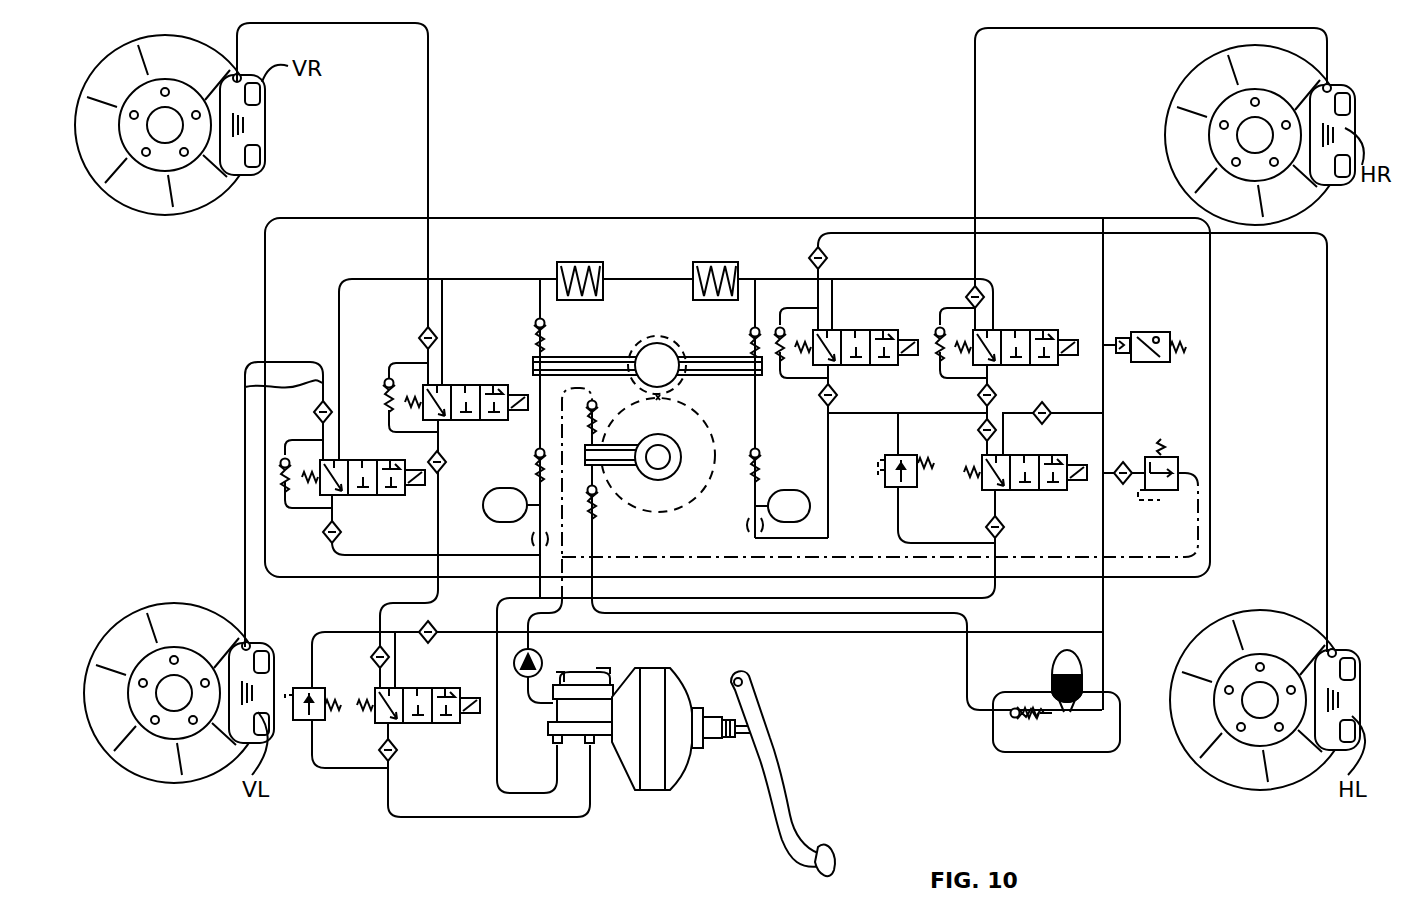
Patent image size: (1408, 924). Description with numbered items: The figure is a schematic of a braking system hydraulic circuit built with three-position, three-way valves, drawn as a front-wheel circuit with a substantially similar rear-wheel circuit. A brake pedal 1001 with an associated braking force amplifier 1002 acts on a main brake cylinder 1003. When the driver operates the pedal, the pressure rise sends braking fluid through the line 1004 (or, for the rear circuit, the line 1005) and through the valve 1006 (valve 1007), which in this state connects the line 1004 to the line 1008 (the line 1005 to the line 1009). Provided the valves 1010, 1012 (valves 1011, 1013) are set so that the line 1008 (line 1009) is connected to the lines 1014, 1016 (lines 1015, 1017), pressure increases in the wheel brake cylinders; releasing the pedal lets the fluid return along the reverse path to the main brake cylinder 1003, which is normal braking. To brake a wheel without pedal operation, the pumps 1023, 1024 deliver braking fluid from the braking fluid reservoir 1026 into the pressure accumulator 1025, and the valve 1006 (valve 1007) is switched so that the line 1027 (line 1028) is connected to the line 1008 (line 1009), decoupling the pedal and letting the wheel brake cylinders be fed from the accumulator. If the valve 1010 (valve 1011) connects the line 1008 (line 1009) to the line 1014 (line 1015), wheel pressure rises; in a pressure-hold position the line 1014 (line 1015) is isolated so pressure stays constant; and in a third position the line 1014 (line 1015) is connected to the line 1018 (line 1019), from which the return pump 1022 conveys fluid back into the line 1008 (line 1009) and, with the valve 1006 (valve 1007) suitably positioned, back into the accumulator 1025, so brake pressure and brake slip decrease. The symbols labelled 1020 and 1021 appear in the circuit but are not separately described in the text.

The brake pedal 1001 is at (787, 800).
The braking force amplifier 1002 is at (653, 783).
The main brake cylinder 1003 is at (562, 742).
The line 1004 is at (462, 820).
The line 1005 is at (497, 783).
The valve 1006 is at (445, 722).
The valve 1007 is at (1033, 491).
The line 1008 is at (437, 593).
The line 1009 is at (978, 420).
The valve 1010 is at (372, 493).
The valve 1011 is at (867, 365).
The valve 1012 is at (467, 420).
The valve 1013 is at (1007, 365).
The line 1014 is at (244, 380).
The line 1015 is at (866, 233).
The line 1016 is at (428, 140).
The line 1017 is at (975, 152).
The line 1018 is at (338, 318).
The line 1019 is at (832, 320).
The check valve 1020 is at (443, 347).
The solenoid valve 1021 is at (993, 303).
The return pump 1022 is at (667, 350).
The pump 1023 is at (542, 658).
The pump 1024 is at (668, 475).
The pressure accumulator 1025 is at (1055, 662).
The braking fluid reservoir 1026 is at (622, 675).
The line 1027 is at (800, 636).
The line 1028 is at (1103, 622).